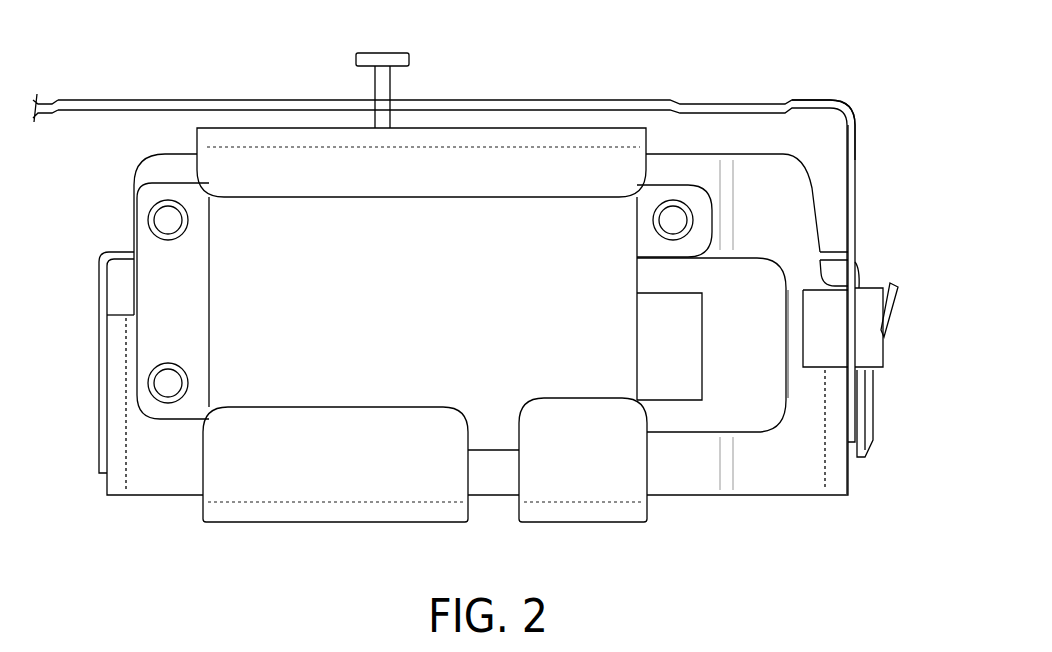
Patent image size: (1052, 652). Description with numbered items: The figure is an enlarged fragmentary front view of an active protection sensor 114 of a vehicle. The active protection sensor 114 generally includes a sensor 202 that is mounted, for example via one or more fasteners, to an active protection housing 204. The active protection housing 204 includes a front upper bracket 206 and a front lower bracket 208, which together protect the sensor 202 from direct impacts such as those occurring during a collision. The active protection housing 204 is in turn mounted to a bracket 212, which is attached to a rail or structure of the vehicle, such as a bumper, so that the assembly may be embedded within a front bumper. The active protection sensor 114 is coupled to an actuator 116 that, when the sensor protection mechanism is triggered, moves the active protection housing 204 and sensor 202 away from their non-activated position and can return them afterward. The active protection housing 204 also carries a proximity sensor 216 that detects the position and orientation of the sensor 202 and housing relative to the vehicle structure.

The active protection sensor 114 is at (600, 56).
The actuator 116 is at (870, 308).
The sensor 202 is at (442, 303).
The active protection housing 204 is at (168, 130).
The front upper bracket 206 is at (472, 143).
The front lower bracket 208 is at (335, 483).
The bracket 212 is at (805, 100).
The proximity sensor 216 is at (825, 347).